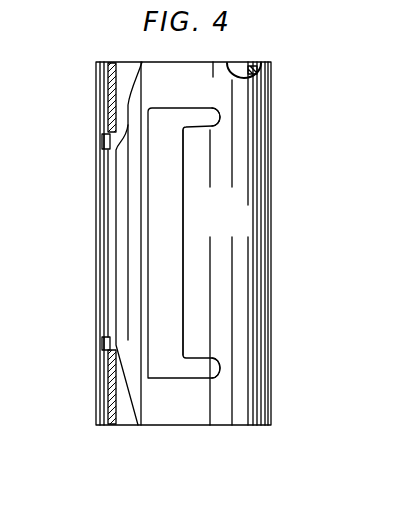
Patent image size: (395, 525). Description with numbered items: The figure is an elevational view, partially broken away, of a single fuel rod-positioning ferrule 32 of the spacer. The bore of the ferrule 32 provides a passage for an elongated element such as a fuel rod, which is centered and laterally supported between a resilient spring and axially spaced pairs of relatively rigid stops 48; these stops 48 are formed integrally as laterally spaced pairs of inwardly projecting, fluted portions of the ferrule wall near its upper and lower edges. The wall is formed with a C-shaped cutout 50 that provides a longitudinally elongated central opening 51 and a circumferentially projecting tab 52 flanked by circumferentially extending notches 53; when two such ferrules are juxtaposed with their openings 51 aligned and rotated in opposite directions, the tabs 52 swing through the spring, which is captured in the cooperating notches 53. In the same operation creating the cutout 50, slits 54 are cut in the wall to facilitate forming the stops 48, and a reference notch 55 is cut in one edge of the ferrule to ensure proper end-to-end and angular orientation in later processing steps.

The ferrule 32 is at (255, 268).
The stops 48 is at (118, 88).
The C-shaped cutout 50 is at (150, 216).
The central opening 51 is at (170, 221).
The tab 52 is at (186, 173).
The notches 53 is at (217, 111).
The slits 54 is at (103, 143).
The reference notch 55 is at (247, 63).